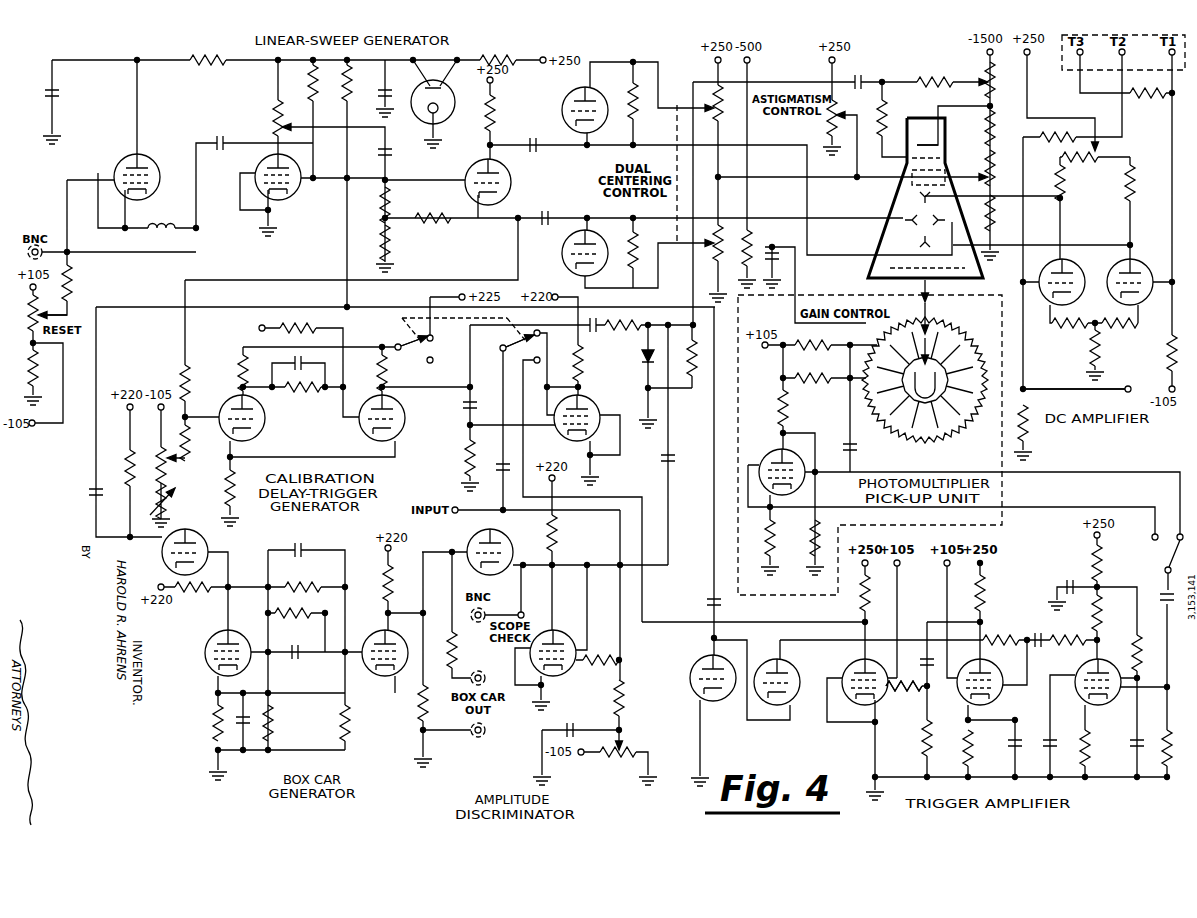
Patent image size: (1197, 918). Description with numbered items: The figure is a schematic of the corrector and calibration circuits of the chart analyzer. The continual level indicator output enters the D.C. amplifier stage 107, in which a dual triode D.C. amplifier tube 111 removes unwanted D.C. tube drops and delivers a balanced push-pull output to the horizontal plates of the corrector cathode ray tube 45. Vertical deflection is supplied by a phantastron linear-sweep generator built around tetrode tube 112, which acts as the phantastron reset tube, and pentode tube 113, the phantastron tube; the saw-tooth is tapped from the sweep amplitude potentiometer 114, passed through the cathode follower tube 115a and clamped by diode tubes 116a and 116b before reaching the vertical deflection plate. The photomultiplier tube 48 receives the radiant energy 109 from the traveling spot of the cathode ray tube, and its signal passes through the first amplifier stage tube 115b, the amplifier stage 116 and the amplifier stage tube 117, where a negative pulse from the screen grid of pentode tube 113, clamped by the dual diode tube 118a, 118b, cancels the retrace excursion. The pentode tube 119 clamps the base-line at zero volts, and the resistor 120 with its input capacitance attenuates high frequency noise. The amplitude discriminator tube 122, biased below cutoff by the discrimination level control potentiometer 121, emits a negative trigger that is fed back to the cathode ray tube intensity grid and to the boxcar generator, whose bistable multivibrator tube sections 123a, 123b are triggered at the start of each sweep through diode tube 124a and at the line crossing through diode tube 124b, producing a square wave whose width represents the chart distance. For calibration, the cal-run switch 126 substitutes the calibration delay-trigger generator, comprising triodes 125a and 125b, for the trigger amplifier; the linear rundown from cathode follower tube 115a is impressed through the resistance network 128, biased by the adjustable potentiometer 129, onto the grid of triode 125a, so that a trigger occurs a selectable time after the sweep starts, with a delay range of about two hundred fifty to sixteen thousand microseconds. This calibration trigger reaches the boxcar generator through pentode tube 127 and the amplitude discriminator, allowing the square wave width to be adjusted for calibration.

The corrector cathode ray tube 45 is at (932, 118).
The photomultiplier tube 48 is at (926, 375).
The D.C. amplifier stage 107 is at (1086, 431).
The light beam 109 is at (930, 300).
The dual diode D.C. amplifier tube 111 is at (1076, 273).
The tetrode tube 112 is at (150, 162).
The pentode tube 113 is at (296, 195).
The sweep amplitude potentiometer 114 is at (276, 118).
The cathode follower tube 115a is at (470, 172).
The first amplifier stage tube 115b is at (776, 456).
The amplifier stage 116 is at (1112, 702).
The diode tube 116a is at (570, 103).
The diode tube 116b is at (563, 258).
The amplifier stage tube 117 is at (974, 699).
The dual diode tube section 118a is at (706, 667).
The dual diode tube section 118b is at (792, 668).
The pentode tube 119 is at (862, 702).
The resistor 120 is at (904, 692).
The discrimination level control potentiometer 121 is at (620, 750).
The amplitude discriminator tube 122 is at (572, 678).
The bistable multivibrator tube section 123a is at (214, 641).
The bistable multivibrator tube section 123b is at (384, 628).
The diode tube 124a is at (207, 548).
The diode tube 124b is at (474, 545).
The triode 125a is at (266, 428).
The triode 125b is at (403, 433).
The cal-run switch 126 is at (394, 337).
The pentode tube 127 is at (590, 403).
The resistance network 128 is at (182, 469).
The adjustable potentiometer 129 is at (168, 498).